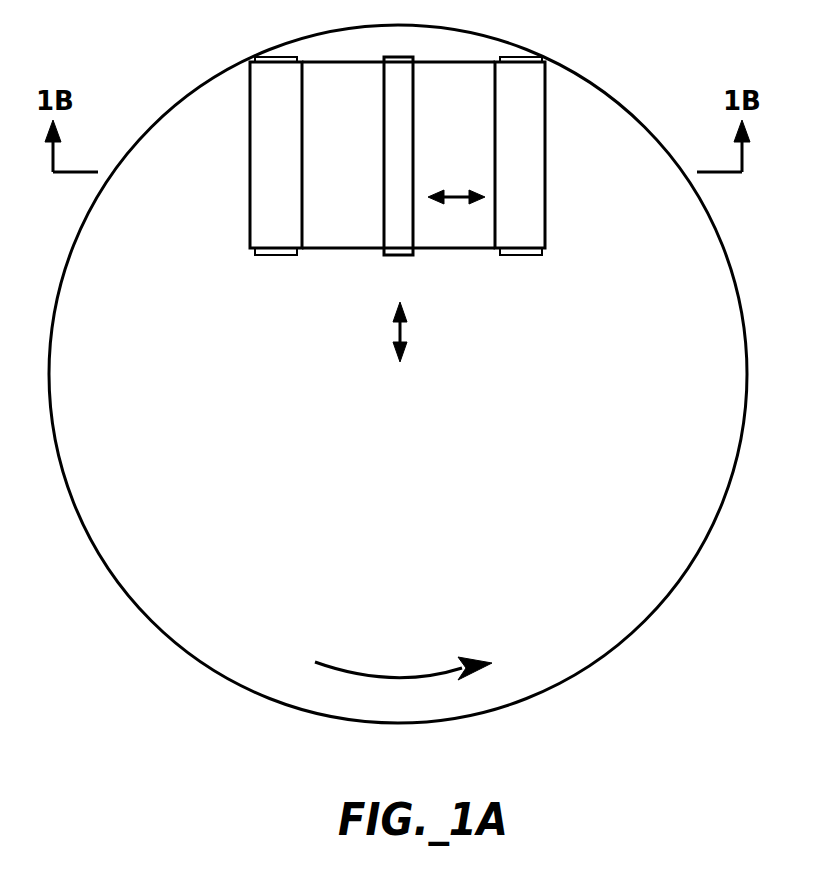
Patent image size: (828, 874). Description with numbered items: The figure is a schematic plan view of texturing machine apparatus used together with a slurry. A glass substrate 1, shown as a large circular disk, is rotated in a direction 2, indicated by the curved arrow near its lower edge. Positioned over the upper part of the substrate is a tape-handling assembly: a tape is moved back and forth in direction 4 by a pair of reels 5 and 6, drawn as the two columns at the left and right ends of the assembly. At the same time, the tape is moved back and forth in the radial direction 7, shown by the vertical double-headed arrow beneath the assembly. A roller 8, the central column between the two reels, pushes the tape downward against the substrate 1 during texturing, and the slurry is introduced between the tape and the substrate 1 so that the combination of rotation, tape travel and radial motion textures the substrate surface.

The glass substrate 1 is at (613, 648).
The direction of substrate rotation 2 is at (395, 673).
The direction of tape motion 4 is at (457, 197).
The reel 5 is at (265, 167).
The reel 6 is at (535, 197).
The radial direction 7 is at (400, 332).
The roller 8 is at (400, 57).